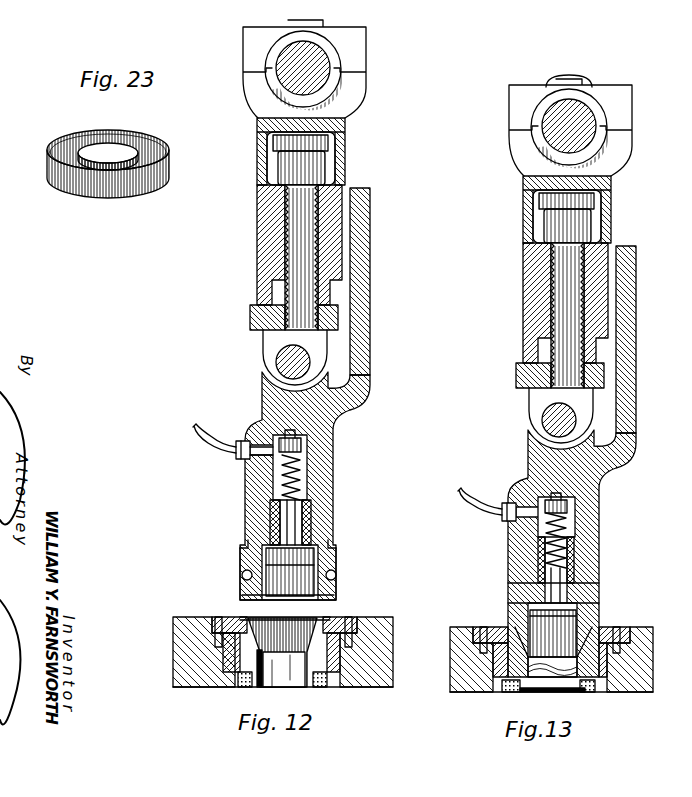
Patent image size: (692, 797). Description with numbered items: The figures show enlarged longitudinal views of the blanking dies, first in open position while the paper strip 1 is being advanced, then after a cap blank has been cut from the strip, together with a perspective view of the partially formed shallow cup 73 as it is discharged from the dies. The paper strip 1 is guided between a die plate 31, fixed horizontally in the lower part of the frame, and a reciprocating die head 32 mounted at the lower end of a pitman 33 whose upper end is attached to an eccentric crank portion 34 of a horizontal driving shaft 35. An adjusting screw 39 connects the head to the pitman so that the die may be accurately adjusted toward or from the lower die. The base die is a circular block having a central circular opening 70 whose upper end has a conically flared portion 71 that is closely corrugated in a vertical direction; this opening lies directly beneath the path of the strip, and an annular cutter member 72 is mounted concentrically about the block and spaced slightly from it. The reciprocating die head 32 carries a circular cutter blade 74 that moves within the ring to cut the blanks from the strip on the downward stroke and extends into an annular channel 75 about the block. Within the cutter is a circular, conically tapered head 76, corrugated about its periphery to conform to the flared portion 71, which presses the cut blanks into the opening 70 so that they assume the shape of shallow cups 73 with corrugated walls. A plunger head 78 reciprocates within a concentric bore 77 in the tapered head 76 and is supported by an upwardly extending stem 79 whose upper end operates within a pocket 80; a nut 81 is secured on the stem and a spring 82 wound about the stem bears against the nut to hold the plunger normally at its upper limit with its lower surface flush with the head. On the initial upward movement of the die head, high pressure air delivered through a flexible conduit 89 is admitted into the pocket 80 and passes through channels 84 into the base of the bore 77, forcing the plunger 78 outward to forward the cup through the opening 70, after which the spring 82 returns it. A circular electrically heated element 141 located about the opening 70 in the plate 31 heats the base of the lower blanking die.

In FIG. 12, the paper strip 1 is at (222, 618).
In FIG. 13, the paper strip 1 is at (480, 627).
In FIG. 12, the die plate 31 is at (212, 683).
In FIG. 13, the die plate 31 is at (487, 682).
In FIG. 12, the reciprocating die head 32 is at (325, 495).
In FIG. 13, the reciprocating die head 32 is at (587, 530).
In FIG. 12, the pitman 33 is at (383, 290).
In FIG. 13, the pitman 33 is at (606, 313).
In FIG. 12, the eccentric crank portion 34 is at (318, 60).
In FIG. 13, the eccentric crank portion 34 is at (605, 131).
In FIG. 12, the horizontal driving shaft 35 is at (322, 96).
In FIG. 13, the horizontal driving shaft 35 is at (588, 125).
In FIG. 12, the adjusting screw 39 is at (262, 290).
In FIG. 13, the adjusting screw 39 is at (535, 315).
In FIG. 12, the central circular opening 70 is at (258, 683).
In FIG. 13, the central circular opening 70 is at (528, 688).
In FIG. 12, the conically flared portion 71 is at (292, 619).
In FIG. 12, the annular cutter member 72 is at (212, 628).
In FIG. 13, the annular cutter member 72 is at (473, 632).
In FIG. 23, the shallow cup 73 is at (169, 153).
In FIG. 13, the shallow cup 73 is at (552, 682).
In FIG. 12, the circular cutter blade 74 is at (330, 590).
In FIG. 13, the circular cutter blade 74 is at (500, 660).
In FIG. 12, the annular channel 75 is at (230, 645).
In FIG. 13, the annular channel 75 is at (511, 686).
In FIG. 12, the conically tapered head 76 is at (242, 582).
In FIG. 12, the concentric bore 77 is at (338, 548).
In FIG. 13, the concentric bore 77 is at (510, 592).
In FIG. 12, the plunger head 78 is at (300, 576).
In FIG. 13, the plunger head 78 is at (598, 632).
In FIG. 12, the stem 79 is at (318, 522).
In FIG. 13, the stem 79 is at (578, 580).
In FIG. 12, the pocket 80 is at (302, 447).
In FIG. 13, the pocket 80 is at (567, 512).
In FIG. 12, the nut 81 is at (252, 425).
In FIG. 13, the nut 81 is at (565, 507).
In FIG. 12, the spring 82 is at (270, 458).
In FIG. 13, the spring 82 is at (535, 520).
In FIG. 12, the channels 84 is at (283, 512).
In FIG. 13, the channels 84 is at (547, 552).
In FIG. 12, the flexible conduit 89 is at (210, 445).
In FIG. 13, the flexible conduit 89 is at (476, 500).
In FIG. 12, the circular electrically heated element 141 is at (327, 682).
In FIG. 13, the circular electrically heated element 141 is at (600, 688).